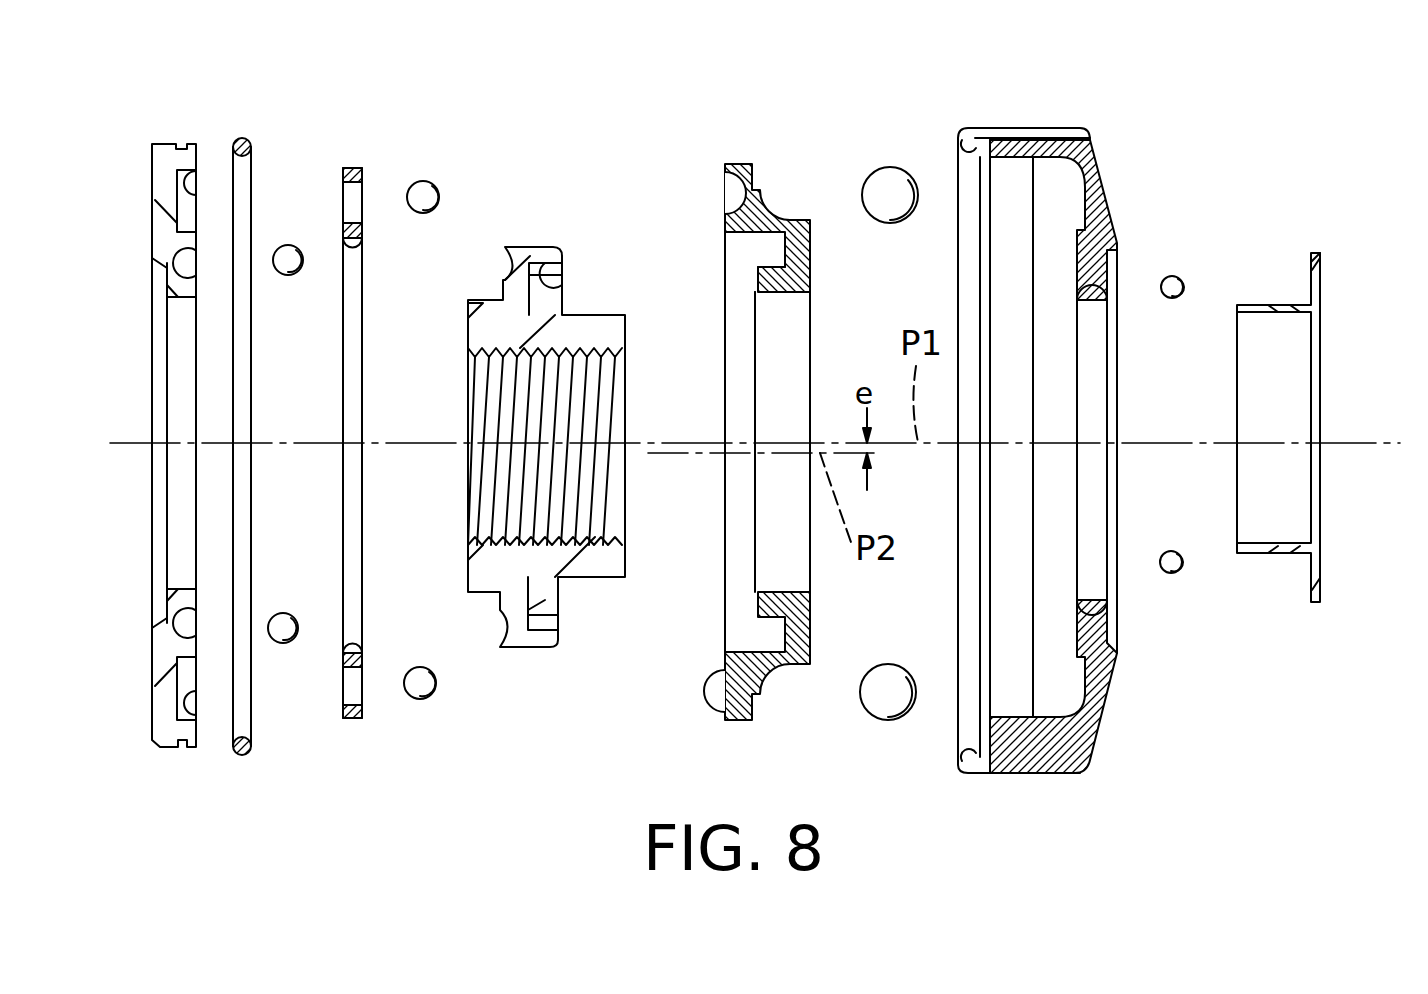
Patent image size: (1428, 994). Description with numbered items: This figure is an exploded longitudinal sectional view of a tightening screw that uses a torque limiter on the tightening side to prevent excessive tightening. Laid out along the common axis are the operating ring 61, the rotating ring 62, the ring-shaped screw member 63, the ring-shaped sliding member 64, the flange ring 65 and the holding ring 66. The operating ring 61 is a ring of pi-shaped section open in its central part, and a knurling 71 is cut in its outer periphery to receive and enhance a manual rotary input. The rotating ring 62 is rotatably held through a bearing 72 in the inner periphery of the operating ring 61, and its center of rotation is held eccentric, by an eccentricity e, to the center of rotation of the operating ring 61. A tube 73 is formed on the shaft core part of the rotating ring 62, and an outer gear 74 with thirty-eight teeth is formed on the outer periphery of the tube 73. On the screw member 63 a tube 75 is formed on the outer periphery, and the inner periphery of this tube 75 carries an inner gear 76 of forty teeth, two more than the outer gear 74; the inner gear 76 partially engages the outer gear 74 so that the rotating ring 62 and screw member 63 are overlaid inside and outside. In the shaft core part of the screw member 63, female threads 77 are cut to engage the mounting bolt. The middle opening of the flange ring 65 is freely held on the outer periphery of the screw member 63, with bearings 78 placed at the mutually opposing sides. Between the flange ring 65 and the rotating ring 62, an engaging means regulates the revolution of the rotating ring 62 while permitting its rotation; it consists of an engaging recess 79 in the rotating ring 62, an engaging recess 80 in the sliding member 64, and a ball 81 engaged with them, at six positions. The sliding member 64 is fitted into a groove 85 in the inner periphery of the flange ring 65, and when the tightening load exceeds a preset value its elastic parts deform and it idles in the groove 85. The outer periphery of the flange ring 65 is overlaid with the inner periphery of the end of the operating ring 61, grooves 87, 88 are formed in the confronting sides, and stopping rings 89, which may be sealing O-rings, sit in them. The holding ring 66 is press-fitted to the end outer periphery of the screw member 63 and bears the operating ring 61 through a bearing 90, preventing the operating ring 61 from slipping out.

The operating ring 61 is at (1087, 143).
The rotating ring 62 is at (755, 200).
The ring-shaped screw member 63 is at (592, 320).
The ring-shaped sliding member 64 is at (350, 167).
The flange ring 65 is at (153, 177).
The holding ring 66 is at (1320, 280).
The knurling 71 is at (1027, 130).
The bearing 72 is at (885, 167).
The tube 73 is at (777, 293).
The outer gear 74 is at (773, 257).
The tube 75 is at (523, 247).
The inner gear 76 is at (560, 287).
The female threads 77 is at (590, 503).
The bearings 78 is at (290, 246).
The engaging recess 79 is at (723, 193).
The engaging recess 80 is at (361, 188).
The ball 81 is at (423, 214).
The groove 85 is at (198, 180).
The groove 87 is at (175, 143).
The groove 88 is at (965, 150).
The stopping rings 89 is at (245, 143).
The bearing 90 is at (1178, 277).